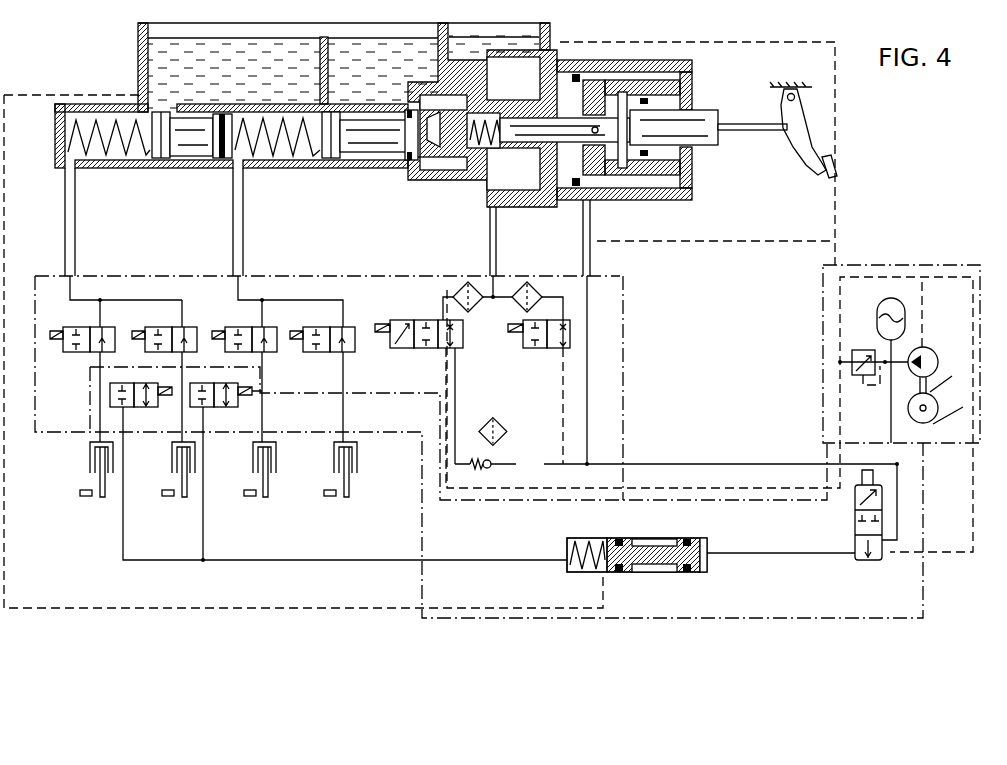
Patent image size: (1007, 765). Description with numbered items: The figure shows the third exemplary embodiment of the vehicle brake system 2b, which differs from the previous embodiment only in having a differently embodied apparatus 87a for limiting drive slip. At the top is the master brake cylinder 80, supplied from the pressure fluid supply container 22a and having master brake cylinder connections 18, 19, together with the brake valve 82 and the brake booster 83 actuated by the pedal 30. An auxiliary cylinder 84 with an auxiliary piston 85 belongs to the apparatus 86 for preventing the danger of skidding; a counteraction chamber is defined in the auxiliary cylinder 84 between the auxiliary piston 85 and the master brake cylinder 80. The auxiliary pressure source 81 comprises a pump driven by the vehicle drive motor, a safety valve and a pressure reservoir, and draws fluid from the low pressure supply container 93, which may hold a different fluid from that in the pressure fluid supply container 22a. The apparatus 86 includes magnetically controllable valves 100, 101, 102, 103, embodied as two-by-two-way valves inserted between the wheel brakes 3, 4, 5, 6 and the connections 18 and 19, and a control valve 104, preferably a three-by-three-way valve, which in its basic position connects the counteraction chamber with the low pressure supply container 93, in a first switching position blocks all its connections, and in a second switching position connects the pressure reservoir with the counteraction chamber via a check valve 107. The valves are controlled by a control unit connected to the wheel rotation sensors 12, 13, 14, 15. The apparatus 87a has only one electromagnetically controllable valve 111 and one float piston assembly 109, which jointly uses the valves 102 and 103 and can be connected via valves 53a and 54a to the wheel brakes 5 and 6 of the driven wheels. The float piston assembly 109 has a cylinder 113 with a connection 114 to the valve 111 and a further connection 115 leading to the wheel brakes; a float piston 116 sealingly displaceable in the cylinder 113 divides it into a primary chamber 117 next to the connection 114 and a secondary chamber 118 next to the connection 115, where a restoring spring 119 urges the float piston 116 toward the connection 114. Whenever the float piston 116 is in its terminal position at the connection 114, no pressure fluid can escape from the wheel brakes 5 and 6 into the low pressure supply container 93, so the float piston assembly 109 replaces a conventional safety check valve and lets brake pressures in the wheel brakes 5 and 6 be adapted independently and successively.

The vehicle brake system 2b is at (860, 192).
The pressure fluid supply container 22a is at (143, 58).
The low pressure supply container 93 is at (465, 55).
The master brake cylinder 80 is at (118, 172).
The master brake cylinder connection 18 is at (68, 172).
The master brake cylinder connection 19 is at (240, 172).
The brake booster 83 is at (688, 198).
The brake valve 82 is at (590, 180).
The brake pedal 30 is at (822, 175).
The auxiliary cylinder 84 is at (497, 212).
The auxiliary piston 85 is at (582, 214).
The apparatus for preventing the danger of skidding 86 is at (322, 278).
The auxiliary pressure source 81 is at (900, 266).
The magnetically controllable valve 102 is at (75, 327).
The magnetically controllable valve 103 is at (154, 327).
The magnetically controllable valve 100 is at (234, 327).
The magnetically controllable valve 101 is at (328, 352).
The control valve 104 is at (412, 300).
The check valve 107 is at (488, 430).
The apparatus for limiting drive slip 87a is at (90, 382).
The valve 53a is at (142, 407).
The valve 54a is at (215, 407).
The wheel brake 5 is at (90, 460).
The wheel brake 6 is at (172, 460).
The wheel brake 3 is at (253, 460).
The wheel brake 4 is at (334, 448).
The wheel rotation sensor 14 is at (86, 497).
The wheel rotation sensor 15 is at (168, 497).
The wheel rotation sensor 12 is at (250, 497).
The wheel rotation sensor 13 is at (330, 497).
The float piston assembly 109 is at (683, 564).
The connection 115 is at (567, 556).
The restoring spring 119 is at (585, 520).
The secondary chamber 118 is at (576, 572).
The cylinder 113 is at (650, 518).
The float piston 116 is at (660, 572).
The primary chamber 117 is at (706, 570).
The connection 114 is at (708, 554).
The electromagnetically controllable valve 111 is at (855, 522).